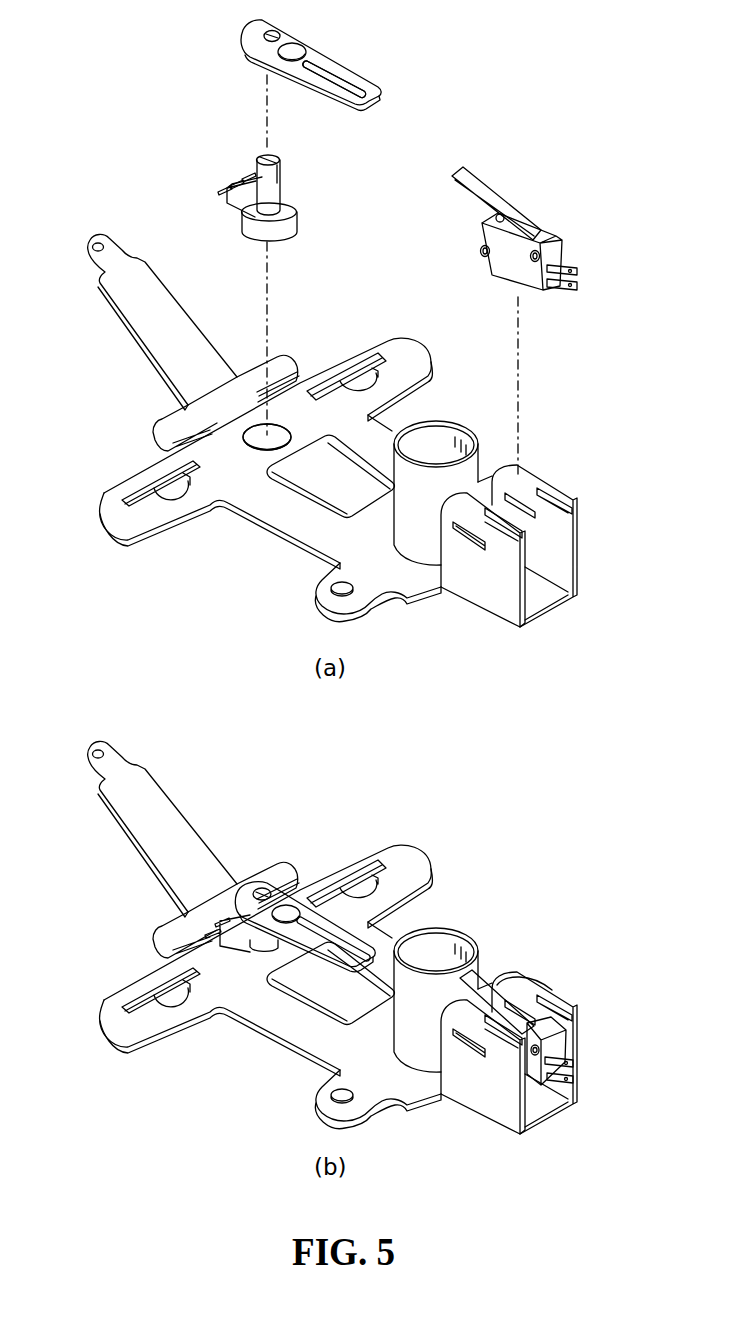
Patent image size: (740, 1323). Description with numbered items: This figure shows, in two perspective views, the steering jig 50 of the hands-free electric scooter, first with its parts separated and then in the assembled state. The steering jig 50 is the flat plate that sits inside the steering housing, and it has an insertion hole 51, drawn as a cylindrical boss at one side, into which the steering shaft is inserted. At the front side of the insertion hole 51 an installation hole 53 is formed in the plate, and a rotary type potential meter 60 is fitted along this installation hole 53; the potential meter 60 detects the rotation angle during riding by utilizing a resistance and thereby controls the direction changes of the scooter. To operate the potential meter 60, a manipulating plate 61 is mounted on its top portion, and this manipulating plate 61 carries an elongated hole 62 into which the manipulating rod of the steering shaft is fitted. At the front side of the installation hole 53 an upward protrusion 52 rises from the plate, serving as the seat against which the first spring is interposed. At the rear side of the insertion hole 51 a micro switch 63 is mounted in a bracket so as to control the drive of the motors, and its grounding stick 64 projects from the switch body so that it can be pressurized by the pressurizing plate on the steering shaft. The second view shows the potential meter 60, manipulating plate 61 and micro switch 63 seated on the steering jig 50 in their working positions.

The steering jig 50 is at (287, 520).
The insertion hole 51 is at (442, 436).
The upward protrusion 52 is at (128, 307).
The installation hole 53 is at (257, 437).
The potential meter 60 is at (288, 200).
The manipulating plate 61 is at (340, 58).
The elongated hole 62 is at (366, 100).
The micro switch 63 is at (545, 238).
The grounding stick 64 is at (486, 192).